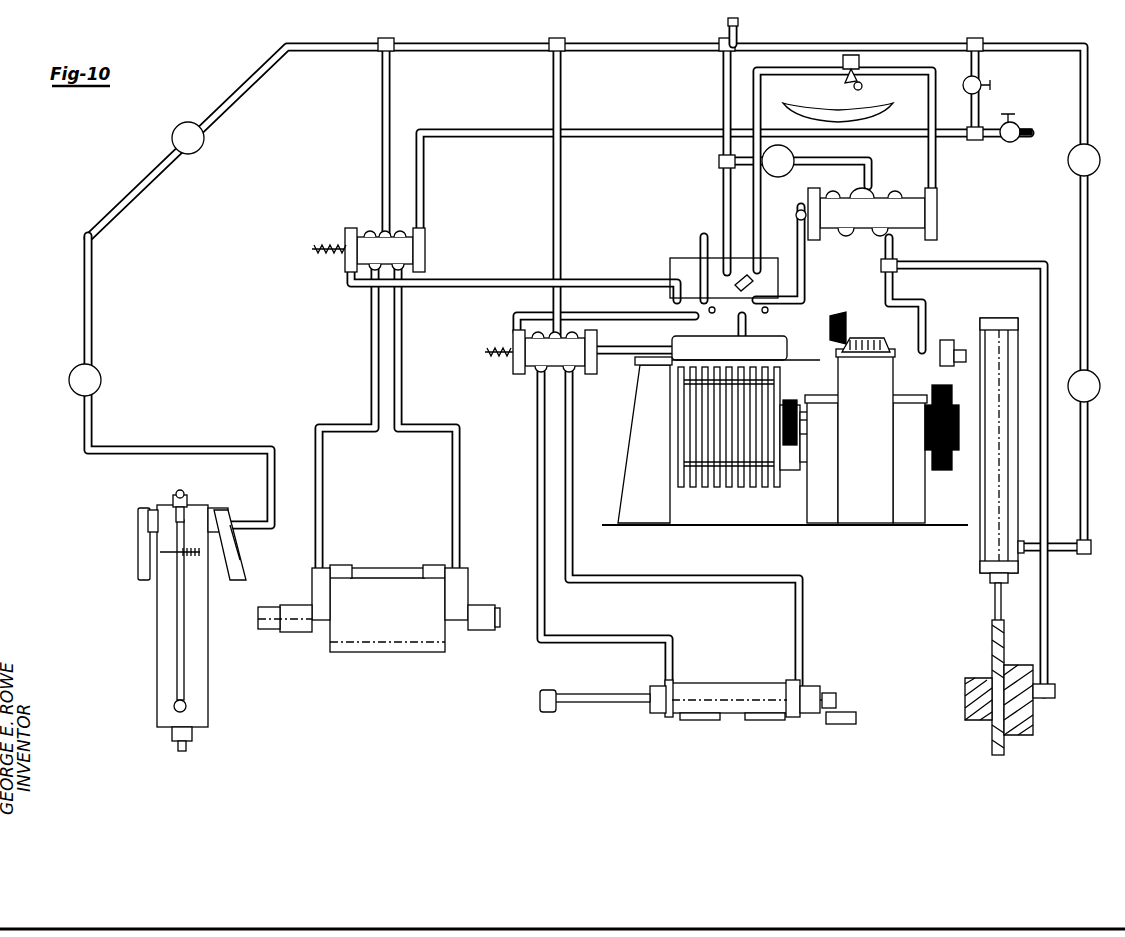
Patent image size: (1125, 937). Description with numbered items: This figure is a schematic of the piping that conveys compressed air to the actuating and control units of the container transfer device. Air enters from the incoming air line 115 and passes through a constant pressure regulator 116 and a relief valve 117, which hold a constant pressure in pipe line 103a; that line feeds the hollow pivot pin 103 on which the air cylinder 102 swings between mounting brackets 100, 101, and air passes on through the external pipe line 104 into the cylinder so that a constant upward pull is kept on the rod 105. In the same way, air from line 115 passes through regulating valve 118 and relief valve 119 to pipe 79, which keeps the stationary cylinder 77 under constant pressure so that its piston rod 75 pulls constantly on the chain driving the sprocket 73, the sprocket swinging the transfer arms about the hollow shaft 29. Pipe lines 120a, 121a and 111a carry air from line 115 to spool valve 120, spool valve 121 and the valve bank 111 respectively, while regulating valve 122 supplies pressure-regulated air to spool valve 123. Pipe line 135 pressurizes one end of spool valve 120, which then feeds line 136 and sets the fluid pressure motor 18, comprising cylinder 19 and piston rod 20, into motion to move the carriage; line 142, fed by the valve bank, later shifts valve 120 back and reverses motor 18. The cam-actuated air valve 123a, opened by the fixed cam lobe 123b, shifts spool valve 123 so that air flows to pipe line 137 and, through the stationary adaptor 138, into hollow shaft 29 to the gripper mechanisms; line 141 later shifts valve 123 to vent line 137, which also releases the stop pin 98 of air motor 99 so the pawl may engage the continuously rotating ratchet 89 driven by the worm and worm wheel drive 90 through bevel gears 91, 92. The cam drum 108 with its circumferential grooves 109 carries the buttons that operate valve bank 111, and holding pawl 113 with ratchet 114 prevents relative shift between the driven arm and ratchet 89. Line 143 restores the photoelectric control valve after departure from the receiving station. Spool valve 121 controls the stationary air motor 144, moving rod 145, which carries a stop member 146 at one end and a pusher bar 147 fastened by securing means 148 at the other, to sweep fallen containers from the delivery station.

The incoming air line 115 is at (738, 28).
The constant pressure regulator 116 is at (172, 136).
The relief valve 117 is at (70, 380).
The regulating valve 118 is at (1080, 174).
The relief valve 119 is at (1072, 375).
The spool valve 120 is at (344, 240).
The pipe line 120a is at (384, 150).
The spool valve 121 is at (518, 368).
The pipe line 121a is at (559, 203).
The regulating valve 122 is at (792, 160).
The spool valve 123 is at (930, 220).
The cam-actuated air valve 123a is at (858, 68).
The cam lobe 123b is at (832, 104).
The pipe line 135 is at (1022, 132).
The pipe line 137 is at (893, 250).
The stationary adaptor 138 is at (1056, 692).
The pipe line 141 is at (806, 272).
The pipe line 142 is at (455, 283).
The pipe line 143 is at (700, 238).
The valve bank 111 is at (670, 262).
The pipe line 111a is at (724, 191).
The worm and worm wheel drive 90 is at (812, 325).
The bevel gear 91 is at (858, 338).
The bevel gear 92 is at (840, 316).
The air motor 99 is at (950, 354).
The stop pin 98 is at (966, 360).
The ratchet 89 is at (938, 470).
The cylinder 77 is at (1014, 326).
The pipe 79 is at (1088, 552).
The piston rod 75 is at (994, 596).
The sprocket 73 is at (992, 640).
The hollow shaft 29 is at (968, 688).
The cam drum 108 is at (680, 470).
The circumferential grooves 109 is at (728, 492).
The holding pawl 113 is at (792, 474).
The ratchet 114 is at (790, 400).
The line 136 is at (460, 508).
The fluid pressure motor 18 is at (419, 656).
The cylinder 19 is at (336, 638).
The piston rod 20 is at (270, 624).
The mounting bracket 100 is at (245, 582).
The mounting bracket 101 is at (140, 560).
The air cylinder 102 is at (196, 500).
The pivot pin 103 is at (138, 520).
The pipe line 103a is at (272, 500).
The external pipe line 104 is at (176, 636).
The rod 105 is at (190, 742).
The stationary air motor 144 is at (704, 688).
The rod 145 is at (600, 702).
The stop member 146 is at (544, 712).
The pusher bar 147 is at (856, 715).
The securing means 148 is at (829, 694).